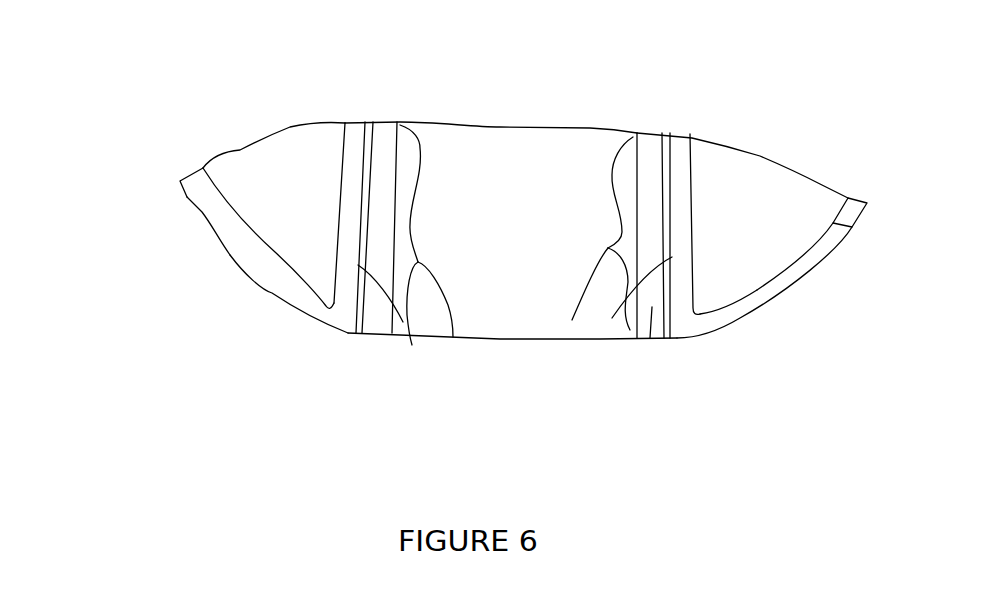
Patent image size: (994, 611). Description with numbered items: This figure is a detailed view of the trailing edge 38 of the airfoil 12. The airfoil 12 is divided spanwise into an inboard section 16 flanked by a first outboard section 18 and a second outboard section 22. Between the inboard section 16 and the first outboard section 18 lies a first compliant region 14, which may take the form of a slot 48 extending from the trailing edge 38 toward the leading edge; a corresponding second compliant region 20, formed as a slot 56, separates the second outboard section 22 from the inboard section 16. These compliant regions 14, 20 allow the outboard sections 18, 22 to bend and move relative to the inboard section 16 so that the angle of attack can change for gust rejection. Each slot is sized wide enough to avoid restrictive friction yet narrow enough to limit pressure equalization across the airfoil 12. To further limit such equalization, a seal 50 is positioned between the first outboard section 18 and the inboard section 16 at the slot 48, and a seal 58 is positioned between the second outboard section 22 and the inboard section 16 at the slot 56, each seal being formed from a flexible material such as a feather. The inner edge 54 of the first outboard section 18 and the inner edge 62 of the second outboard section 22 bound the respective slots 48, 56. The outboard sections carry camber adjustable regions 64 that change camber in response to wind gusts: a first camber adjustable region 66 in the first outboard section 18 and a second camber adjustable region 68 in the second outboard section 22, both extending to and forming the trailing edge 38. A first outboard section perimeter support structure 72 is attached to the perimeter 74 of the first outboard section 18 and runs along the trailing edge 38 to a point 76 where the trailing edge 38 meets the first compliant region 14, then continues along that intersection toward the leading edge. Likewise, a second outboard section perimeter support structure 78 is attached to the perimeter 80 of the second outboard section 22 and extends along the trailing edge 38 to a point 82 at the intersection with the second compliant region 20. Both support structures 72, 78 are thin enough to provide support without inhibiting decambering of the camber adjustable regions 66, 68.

The airfoil 12 is at (511, 85).
The first compliant region 14 is at (453, 337).
The inboard section 16 is at (588, 167).
The first outboard section 18 is at (187, 197).
The second compliant region 20 is at (572, 320).
The second outboard section 22 is at (762, 310).
The trailing edge 38 is at (230, 255).
The slot 48 is at (357, 333).
The seal 50 is at (375, 310).
The inner edge 54 is at (403, 322).
The slot 56 is at (664, 338).
The seal 58 is at (650, 338).
The inner edge 62 is at (612, 318).
The camber adjustable regions 64 is at (235, 170).
The first camber adjustable region 66 is at (280, 198).
The second camber adjustable region 68 is at (767, 227).
The first outboard section perimeter support structure 72 is at (282, 282).
The perimeter 74 is at (218, 205).
The point 76 is at (357, 333).
The second outboard section perimeter support structure 78 is at (823, 247).
The perimeter 80 is at (838, 223).
The point 82 is at (670, 338).